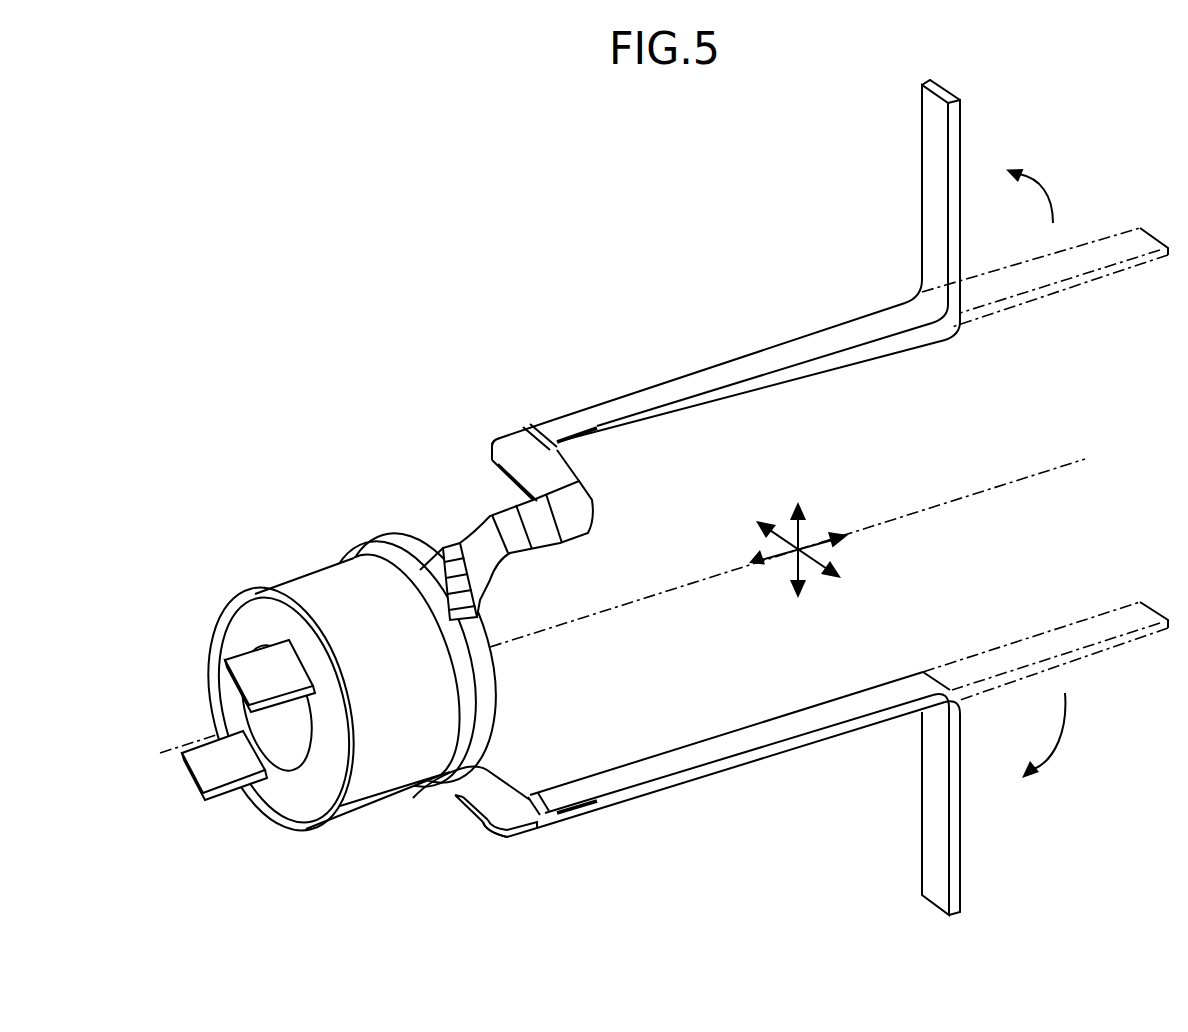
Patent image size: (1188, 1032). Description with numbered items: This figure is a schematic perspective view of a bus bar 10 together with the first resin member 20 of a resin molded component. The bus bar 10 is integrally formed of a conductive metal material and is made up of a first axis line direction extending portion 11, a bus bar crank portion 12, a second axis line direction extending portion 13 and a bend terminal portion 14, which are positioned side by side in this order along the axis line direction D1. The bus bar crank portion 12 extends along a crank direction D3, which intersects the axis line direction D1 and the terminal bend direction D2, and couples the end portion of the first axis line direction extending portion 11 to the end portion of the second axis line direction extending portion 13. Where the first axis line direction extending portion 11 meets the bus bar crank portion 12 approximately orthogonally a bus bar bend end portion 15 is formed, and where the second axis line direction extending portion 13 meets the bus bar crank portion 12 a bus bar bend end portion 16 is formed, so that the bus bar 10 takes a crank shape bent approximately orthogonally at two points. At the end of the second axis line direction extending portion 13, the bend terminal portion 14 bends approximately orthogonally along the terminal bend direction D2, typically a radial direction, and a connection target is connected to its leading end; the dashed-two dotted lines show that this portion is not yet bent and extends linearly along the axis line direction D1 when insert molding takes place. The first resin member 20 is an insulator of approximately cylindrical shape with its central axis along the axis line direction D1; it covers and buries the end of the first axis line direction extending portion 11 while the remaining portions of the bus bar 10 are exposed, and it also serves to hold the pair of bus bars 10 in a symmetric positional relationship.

The bus bar 10 is at (782, 498).
The first axis line direction extending portion 11 is at (252, 674).
The bus bar crank portion 12 is at (553, 465).
The second axis line direction extending portion 13 is at (722, 370).
The bend terminal portion 14 is at (930, 212).
The bus bar bend end portion 15 is at (606, 529).
The bus bar bend end portion 16 is at (484, 430).
The first resin member 20 is at (266, 556).
The axis line direction D1 is at (768, 566).
The terminal bend direction D2 is at (802, 530).
The crank direction D3 is at (818, 556).